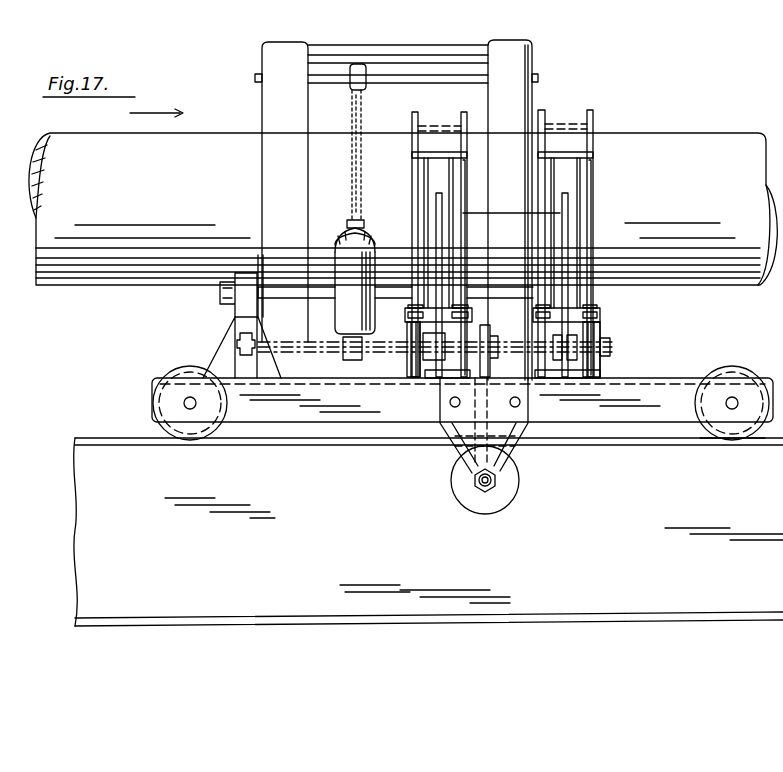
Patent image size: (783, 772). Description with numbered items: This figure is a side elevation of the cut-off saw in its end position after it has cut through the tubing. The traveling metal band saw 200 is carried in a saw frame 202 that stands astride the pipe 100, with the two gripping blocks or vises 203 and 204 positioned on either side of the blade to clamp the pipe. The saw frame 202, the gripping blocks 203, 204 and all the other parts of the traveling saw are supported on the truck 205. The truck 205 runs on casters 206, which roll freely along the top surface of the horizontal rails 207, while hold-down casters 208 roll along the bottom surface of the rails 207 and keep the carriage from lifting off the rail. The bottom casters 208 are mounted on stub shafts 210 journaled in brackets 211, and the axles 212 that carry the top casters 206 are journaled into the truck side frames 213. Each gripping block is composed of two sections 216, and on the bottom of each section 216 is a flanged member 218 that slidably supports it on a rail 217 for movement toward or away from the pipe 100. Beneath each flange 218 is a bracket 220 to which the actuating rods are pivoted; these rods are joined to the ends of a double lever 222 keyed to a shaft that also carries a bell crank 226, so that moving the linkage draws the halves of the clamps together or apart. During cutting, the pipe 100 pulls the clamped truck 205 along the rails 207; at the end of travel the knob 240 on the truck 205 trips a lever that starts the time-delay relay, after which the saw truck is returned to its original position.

The pipe 100 is at (716, 138).
The traveling metal band saw 200 is at (399, 198).
The saw frame 202 is at (513, 100).
The gripping block 203 is at (430, 122).
The gripping block 204 is at (558, 120).
The truck 205 is at (657, 385).
The caster 206 is at (188, 427).
The horizontal rail 207 is at (708, 437).
The hold-down caster 208 is at (512, 498).
The stub shaft 210 is at (480, 483).
The bracket 211 is at (513, 450).
The axle 212 is at (184, 405).
The truck side frame 213 is at (368, 410).
The section 216 is at (470, 224).
The rail 217 is at (440, 311).
The flanged member 218 is at (473, 313).
The bracket 220 is at (395, 331).
The double lever 222 is at (427, 365).
The bell crank 226 is at (412, 366).
The knob 240 is at (473, 457).